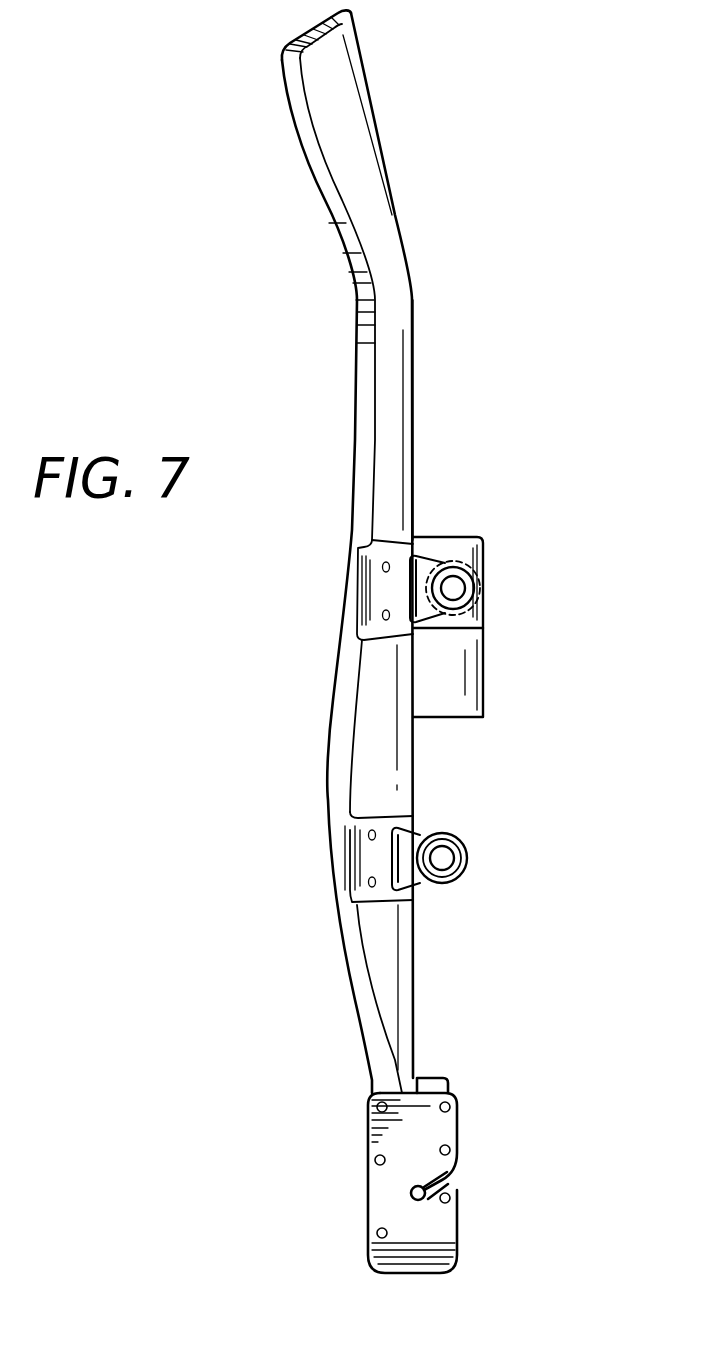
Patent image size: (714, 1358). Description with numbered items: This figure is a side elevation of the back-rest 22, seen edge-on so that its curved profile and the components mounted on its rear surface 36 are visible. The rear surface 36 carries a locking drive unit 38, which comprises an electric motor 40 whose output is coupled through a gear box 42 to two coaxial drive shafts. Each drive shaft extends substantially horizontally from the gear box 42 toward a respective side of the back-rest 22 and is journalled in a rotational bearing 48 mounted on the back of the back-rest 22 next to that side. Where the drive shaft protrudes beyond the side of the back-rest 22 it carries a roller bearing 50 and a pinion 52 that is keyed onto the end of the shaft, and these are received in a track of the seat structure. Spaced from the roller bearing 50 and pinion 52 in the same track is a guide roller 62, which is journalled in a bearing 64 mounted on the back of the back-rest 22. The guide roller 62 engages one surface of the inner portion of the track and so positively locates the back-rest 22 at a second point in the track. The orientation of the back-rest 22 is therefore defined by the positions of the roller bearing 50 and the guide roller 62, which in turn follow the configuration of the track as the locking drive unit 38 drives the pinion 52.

The back-rest 22 is at (330, 318).
The rear surface 36 is at (414, 293).
The locking drive unit 38 is at (289, 679).
The electric motor 40 is at (289, 679).
The gear box 42 is at (392, 674).
The rotational bearing 48 is at (430, 565).
The roller bearing 50 is at (538, 566).
The pinion 52 is at (472, 575).
The guide roller 62 is at (468, 856).
The bearing 64 is at (420, 888).